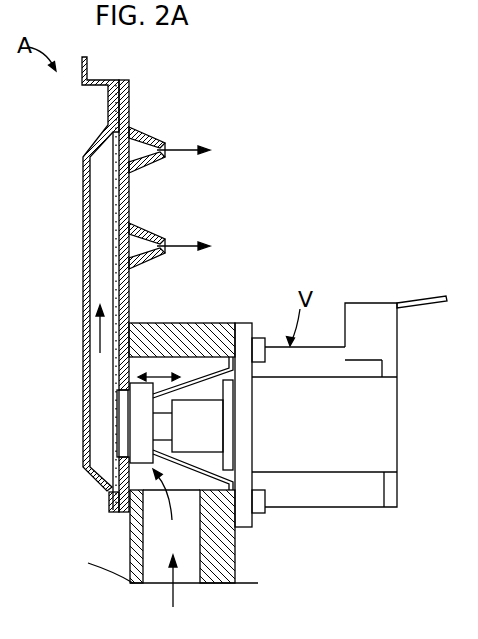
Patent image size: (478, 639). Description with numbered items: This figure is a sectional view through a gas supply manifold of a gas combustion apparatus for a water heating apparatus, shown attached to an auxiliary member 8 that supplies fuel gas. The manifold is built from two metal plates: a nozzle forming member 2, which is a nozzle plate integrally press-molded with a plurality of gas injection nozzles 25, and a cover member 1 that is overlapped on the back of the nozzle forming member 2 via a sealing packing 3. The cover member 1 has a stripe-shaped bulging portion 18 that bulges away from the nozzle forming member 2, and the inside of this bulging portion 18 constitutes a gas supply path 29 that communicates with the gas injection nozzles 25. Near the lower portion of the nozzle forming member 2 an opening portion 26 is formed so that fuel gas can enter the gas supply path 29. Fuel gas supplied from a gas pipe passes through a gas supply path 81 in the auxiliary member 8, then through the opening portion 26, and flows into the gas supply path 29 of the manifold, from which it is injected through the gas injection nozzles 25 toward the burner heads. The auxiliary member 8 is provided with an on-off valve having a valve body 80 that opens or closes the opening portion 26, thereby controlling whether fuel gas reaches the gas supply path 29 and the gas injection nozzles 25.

The cover member 1 is at (97, 131).
The nozzle forming member 2 is at (129, 98).
The sealing packing 3 is at (117, 88).
The auxiliary member 8 is at (207, 327).
The bulging portion 18 is at (87, 287).
The gas injection nozzle 25 is at (160, 140).
The opening portion 26 is at (123, 417).
The gas supply path 29 is at (93, 227).
The valve body 80 is at (142, 425).
The gas supply path 81 is at (225, 557).